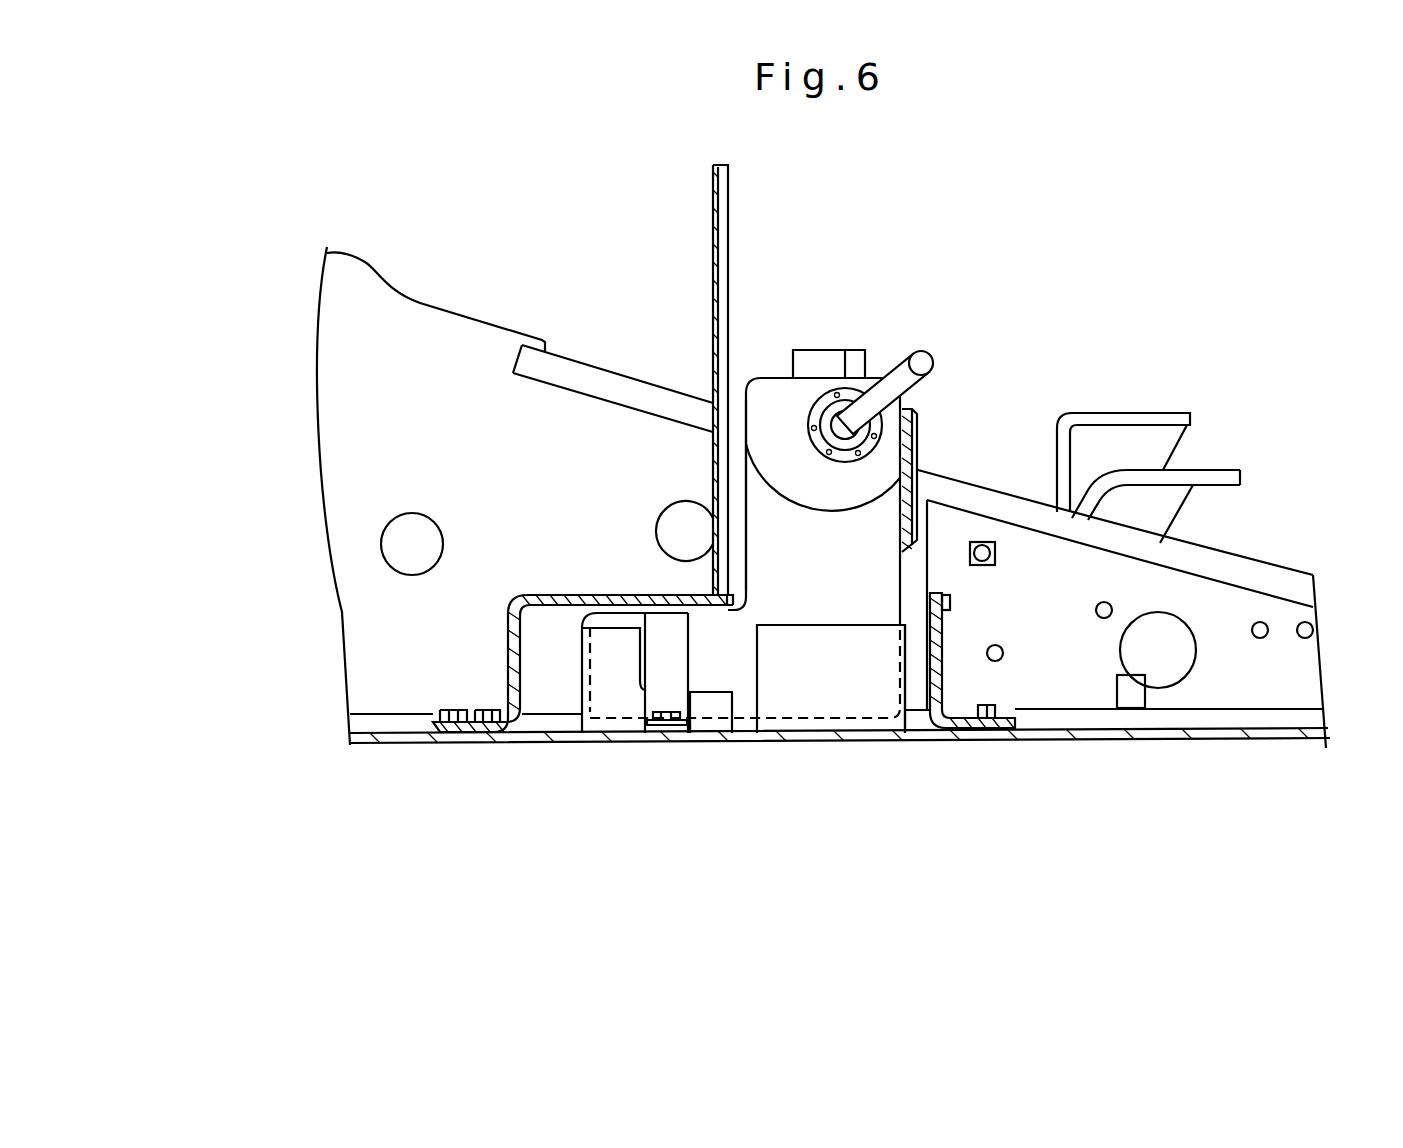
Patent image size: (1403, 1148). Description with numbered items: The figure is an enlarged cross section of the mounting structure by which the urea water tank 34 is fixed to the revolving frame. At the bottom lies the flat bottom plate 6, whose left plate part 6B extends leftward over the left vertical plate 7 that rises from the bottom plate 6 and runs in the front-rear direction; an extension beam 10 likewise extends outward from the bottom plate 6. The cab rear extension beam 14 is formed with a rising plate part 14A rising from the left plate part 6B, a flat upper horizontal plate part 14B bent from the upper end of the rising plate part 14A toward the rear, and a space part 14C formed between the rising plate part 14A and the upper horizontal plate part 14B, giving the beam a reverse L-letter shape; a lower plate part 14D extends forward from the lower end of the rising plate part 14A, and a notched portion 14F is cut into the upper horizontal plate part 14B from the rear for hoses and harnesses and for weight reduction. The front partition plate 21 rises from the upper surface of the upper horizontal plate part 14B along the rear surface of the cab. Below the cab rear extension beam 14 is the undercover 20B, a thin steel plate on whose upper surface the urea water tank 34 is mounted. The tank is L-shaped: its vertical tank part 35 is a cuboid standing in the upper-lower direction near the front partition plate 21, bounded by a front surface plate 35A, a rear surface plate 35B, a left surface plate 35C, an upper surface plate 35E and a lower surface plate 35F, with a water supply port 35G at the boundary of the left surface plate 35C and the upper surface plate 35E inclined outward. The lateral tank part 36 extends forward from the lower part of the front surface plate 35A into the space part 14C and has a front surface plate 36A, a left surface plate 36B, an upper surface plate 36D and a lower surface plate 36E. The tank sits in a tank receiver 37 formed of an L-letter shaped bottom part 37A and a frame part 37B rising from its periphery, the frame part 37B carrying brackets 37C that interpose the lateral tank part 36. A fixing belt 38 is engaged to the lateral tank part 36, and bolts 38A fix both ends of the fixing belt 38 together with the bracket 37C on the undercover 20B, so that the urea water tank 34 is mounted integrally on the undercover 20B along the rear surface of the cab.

The bottom plate 6 is at (801, 775).
The left plate part 6B is at (368, 722).
The left vertical plate 7 is at (393, 384).
The extension beam 10 is at (977, 730).
The cab rear extension beam 14 is at (500, 638).
The rising plate part 14A is at (512, 640).
The upper horizontal plate part 14B is at (568, 595).
The space part 14C is at (540, 657).
The lower plate part 14D is at (465, 733).
The notched portion 14F is at (720, 558).
The undercover 20B is at (1066, 738).
The front partition plate 21 is at (712, 268).
The urea water tank 34 is at (826, 330).
The vertical tank part 35 is at (809, 527).
The front surface plate 35A is at (746, 448).
The rear surface plate 35B is at (908, 450).
The left surface plate 35C is at (852, 525).
The upper surface plate 35E is at (870, 376).
The lower surface plate 35F is at (848, 720).
The water supply port 35G is at (926, 360).
The lateral tank part 36 is at (645, 667).
The front surface plate 36A is at (586, 722).
The left surface plate 36B is at (740, 684).
The upper surface plate 36D is at (698, 606).
The lower surface plate 36E is at (610, 740).
The tank receiver 37 is at (789, 754).
The bottom part 37A is at (722, 692).
The frame part 37B is at (887, 688).
The bracket 37C is at (680, 733).
The fixing belt 38 is at (652, 730).
The bolt 38A is at (668, 725).